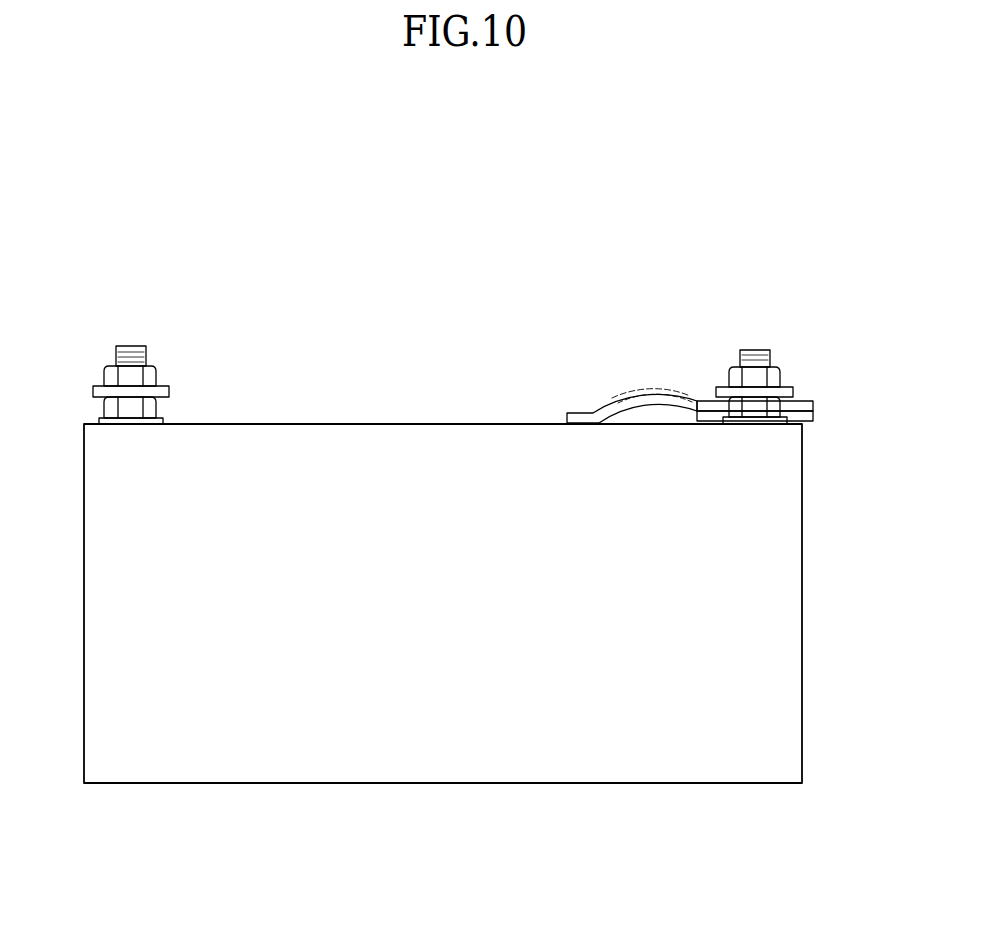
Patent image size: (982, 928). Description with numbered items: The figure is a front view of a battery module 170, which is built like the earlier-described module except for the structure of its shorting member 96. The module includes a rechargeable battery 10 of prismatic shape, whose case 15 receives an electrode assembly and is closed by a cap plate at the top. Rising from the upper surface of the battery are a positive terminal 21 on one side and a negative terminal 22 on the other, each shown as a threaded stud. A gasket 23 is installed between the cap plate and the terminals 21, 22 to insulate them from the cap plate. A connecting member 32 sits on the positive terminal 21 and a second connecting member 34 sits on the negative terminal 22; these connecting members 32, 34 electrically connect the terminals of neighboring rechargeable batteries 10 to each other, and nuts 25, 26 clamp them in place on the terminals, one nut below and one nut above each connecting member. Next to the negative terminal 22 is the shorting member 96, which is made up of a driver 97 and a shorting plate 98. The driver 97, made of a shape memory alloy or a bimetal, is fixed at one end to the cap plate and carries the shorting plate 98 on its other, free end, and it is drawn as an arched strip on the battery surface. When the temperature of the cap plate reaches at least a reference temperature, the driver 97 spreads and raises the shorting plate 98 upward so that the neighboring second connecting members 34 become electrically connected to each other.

The battery module 170 is at (455, 203).
The rechargeable battery 10 is at (370, 786).
The case 15 is at (602, 750).
The positive terminal 21 is at (131, 347).
The negative terminal 22 is at (757, 358).
The gasket 23 is at (99, 420).
The nut 25 is at (106, 405).
The nut 26 is at (108, 368).
The connecting member 32 is at (163, 388).
The second connecting member 34 is at (788, 393).
The shorting member 96 is at (610, 393).
The driver 97 is at (664, 393).
The shorting plate 98 is at (807, 407).